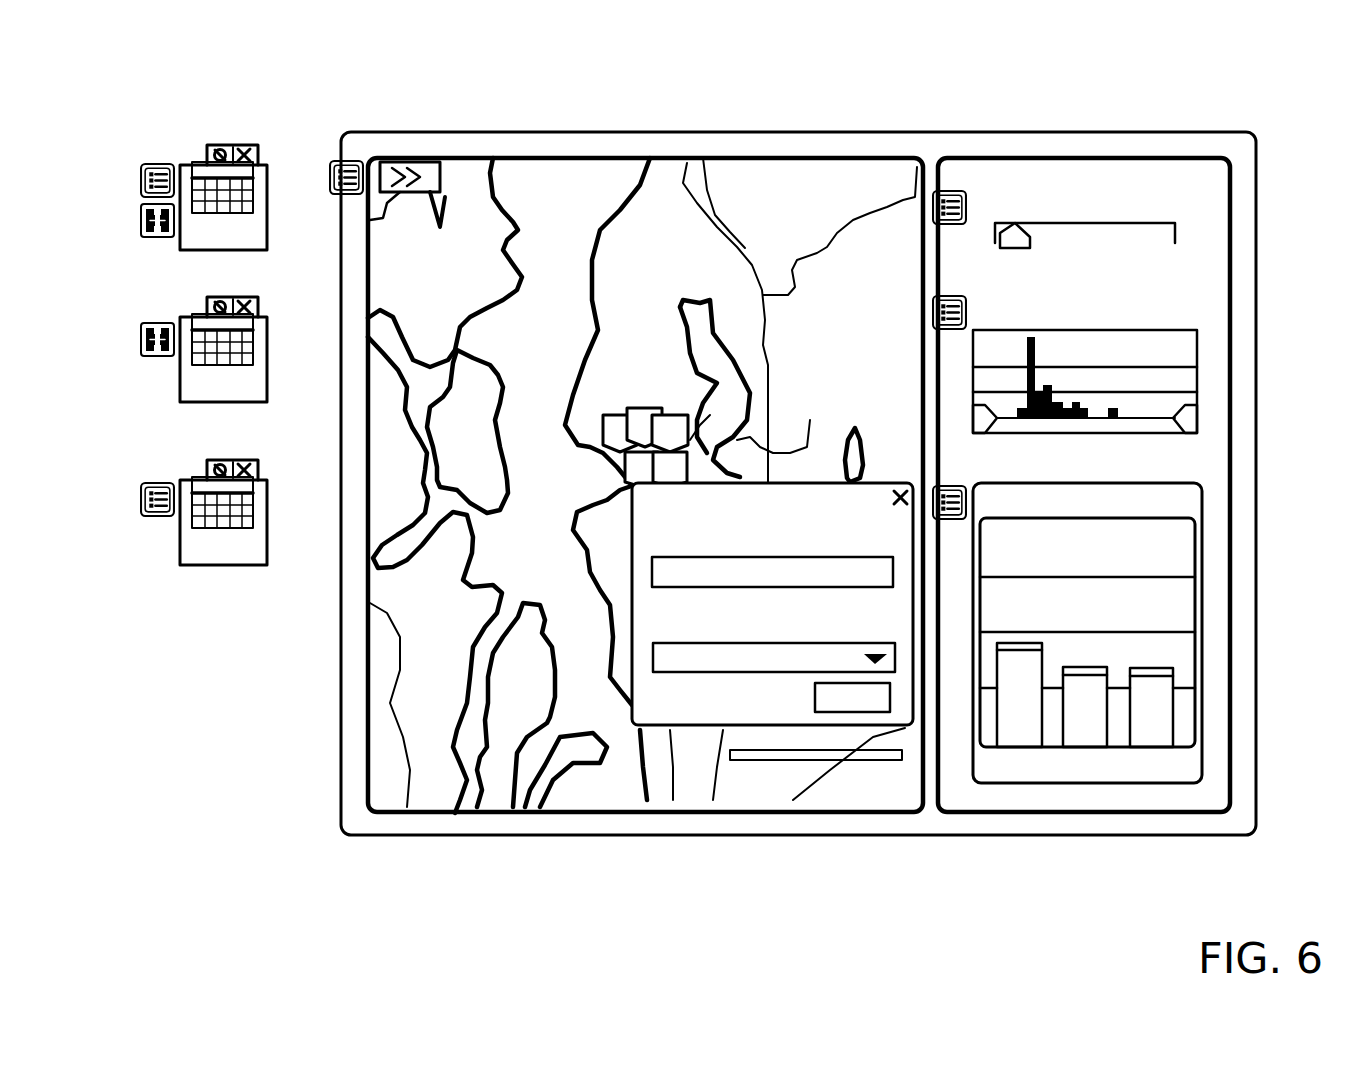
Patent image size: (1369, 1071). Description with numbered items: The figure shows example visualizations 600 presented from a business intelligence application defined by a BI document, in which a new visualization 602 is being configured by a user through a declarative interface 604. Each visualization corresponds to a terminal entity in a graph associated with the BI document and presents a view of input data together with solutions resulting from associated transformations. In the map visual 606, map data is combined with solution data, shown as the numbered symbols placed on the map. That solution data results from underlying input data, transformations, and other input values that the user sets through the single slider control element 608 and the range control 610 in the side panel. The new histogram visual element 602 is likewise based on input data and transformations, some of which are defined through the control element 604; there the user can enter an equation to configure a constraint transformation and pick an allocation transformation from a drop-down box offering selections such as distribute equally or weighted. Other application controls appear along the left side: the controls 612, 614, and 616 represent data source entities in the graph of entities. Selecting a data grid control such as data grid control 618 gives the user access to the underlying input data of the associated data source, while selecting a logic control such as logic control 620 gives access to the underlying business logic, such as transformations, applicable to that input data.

The example visualizations 600 is at (1256, 94).
The new histogram visual element 602 is at (1140, 783).
The declarative interface 604 is at (913, 730).
The map visual 606 is at (515, 158).
The single slider control element 608 is at (1205, 222).
The range control 610 is at (1213, 367).
The data source control 612 is at (139, 148).
The data source control 614 is at (139, 296).
The data source control 616 is at (139, 461).
The data grid control 618 is at (140, 180).
The logic control 620 is at (140, 339).